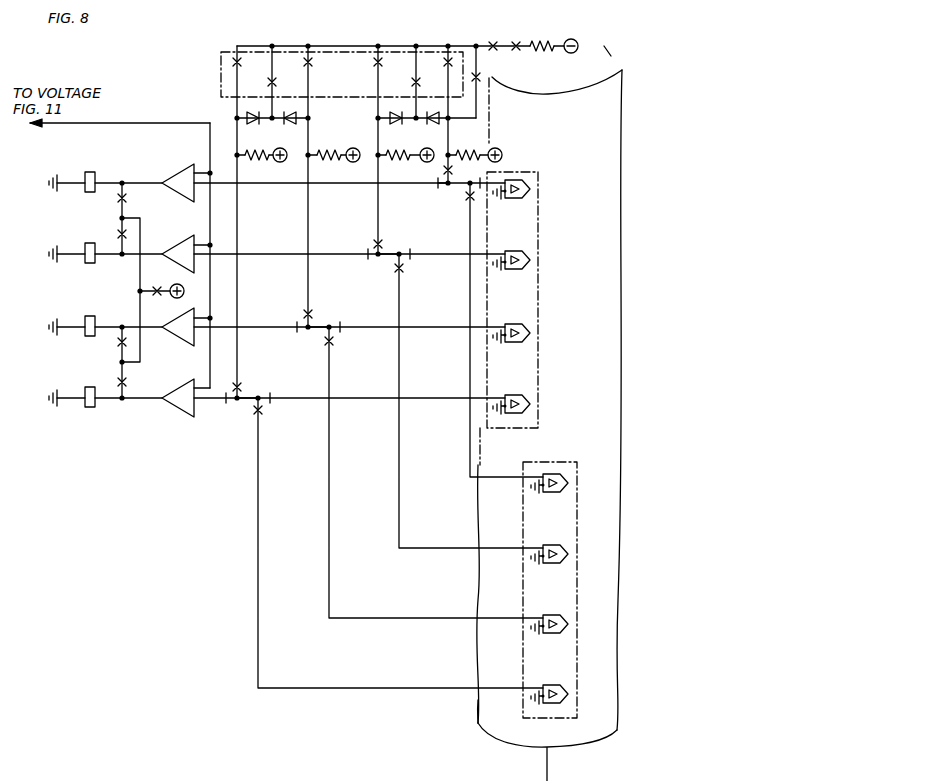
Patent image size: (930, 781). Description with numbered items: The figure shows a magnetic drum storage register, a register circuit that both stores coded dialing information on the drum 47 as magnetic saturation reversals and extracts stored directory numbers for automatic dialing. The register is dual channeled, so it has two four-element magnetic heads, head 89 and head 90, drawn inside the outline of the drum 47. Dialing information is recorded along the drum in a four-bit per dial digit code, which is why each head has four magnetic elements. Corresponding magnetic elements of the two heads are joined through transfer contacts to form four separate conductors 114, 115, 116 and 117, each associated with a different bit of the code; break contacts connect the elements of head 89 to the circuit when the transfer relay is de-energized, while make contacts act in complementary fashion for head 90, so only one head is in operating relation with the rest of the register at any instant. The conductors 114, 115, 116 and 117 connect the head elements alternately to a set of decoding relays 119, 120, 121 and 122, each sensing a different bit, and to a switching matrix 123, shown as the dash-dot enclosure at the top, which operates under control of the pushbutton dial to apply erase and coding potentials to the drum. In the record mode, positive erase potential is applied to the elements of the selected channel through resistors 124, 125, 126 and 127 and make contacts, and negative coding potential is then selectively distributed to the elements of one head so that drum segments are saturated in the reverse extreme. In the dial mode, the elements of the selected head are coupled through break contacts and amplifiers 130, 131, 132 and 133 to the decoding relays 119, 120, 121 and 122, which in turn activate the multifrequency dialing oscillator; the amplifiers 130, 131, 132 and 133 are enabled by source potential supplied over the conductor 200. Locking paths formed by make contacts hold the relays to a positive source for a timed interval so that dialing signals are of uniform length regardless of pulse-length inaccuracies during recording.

The conductor 200 is at (112, 123).
The switching matrix 123 is at (221, 70).
The decoding relay 119 is at (90, 167).
The decoding relay 120 is at (90, 266).
The decoding relay 121 is at (100, 309).
The decoding relay 122 is at (92, 410).
The amplifier 130 is at (177, 197).
The amplifier 131 is at (177, 246).
The amplifier 132 is at (178, 340).
The amplifier 133 is at (178, 410).
The resistor 127 is at (252, 160).
The resistor 126 is at (322, 160).
The resistor 125 is at (410, 145).
The resistor 124 is at (467, 152).
The conductor 114 is at (448, 186).
The conductor 115 is at (390, 258).
The conductor 116 is at (310, 333).
The conductor 117 is at (246, 403).
The magnetic head 89 is at (540, 195).
The magnetic head 90 is at (578, 515).
The drum 47 is at (520, 745).